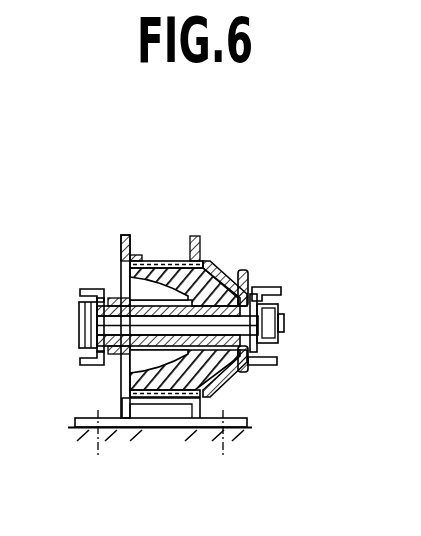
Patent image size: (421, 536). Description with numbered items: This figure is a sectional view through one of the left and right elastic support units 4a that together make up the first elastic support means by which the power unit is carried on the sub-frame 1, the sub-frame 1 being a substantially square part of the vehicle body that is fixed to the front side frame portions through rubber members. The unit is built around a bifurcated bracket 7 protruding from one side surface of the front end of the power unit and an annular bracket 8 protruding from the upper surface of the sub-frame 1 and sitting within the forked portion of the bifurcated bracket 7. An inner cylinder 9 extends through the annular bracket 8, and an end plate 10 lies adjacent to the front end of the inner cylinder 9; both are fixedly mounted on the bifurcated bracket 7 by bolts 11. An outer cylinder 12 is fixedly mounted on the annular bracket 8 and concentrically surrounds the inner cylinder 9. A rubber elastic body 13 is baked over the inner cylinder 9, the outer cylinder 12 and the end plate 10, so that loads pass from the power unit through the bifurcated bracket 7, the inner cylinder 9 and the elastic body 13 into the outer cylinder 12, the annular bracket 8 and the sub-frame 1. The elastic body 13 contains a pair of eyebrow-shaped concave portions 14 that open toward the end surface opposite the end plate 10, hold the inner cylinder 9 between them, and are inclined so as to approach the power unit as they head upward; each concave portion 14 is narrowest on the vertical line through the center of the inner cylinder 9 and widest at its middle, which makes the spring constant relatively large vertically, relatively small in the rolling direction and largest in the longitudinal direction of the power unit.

The sub-frame 1 is at (170, 430).
The elastic support unit 4a is at (256, 241).
The bifurcated bracket 7 is at (82, 290).
The annular bracket 8 is at (126, 235).
The inner cylinder 9 is at (95, 341).
The end plate 10 is at (250, 282).
The bolt 11 is at (285, 323).
The outer cylinder 12 is at (161, 261).
The elastic body 13 is at (215, 260).
The eyebrow-shaped concave portion 14 is at (125, 283).